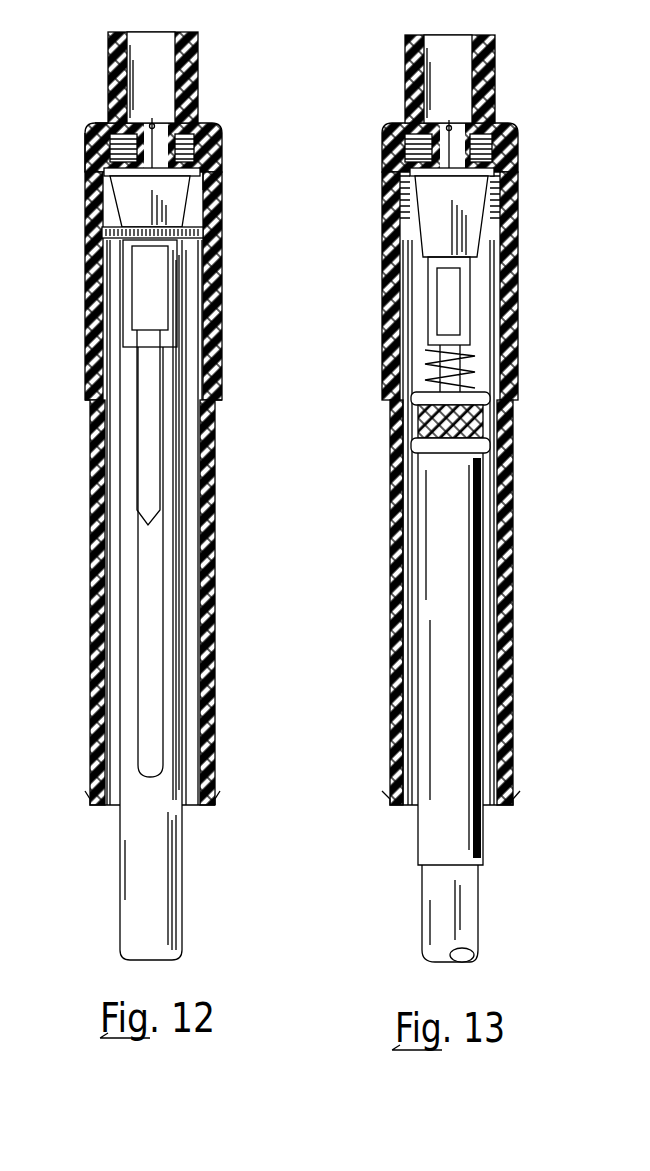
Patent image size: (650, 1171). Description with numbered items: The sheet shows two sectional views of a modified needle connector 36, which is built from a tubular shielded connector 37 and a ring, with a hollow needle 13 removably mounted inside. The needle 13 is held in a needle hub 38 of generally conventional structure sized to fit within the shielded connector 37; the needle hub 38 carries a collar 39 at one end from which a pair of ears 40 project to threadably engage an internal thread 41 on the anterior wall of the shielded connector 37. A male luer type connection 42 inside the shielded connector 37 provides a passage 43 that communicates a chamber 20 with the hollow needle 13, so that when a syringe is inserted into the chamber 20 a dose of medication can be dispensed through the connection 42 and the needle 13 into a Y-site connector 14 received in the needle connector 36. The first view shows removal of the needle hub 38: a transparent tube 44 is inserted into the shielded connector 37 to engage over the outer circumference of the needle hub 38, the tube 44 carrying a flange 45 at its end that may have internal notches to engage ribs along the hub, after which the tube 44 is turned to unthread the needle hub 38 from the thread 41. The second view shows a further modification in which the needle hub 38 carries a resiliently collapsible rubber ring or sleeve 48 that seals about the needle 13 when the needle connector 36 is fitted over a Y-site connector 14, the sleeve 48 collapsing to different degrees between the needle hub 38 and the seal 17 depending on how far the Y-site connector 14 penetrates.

In FIG. 13, the needle 13 is at (470, 378).
In FIG. 13, the Y-site connector 14 is at (412, 525).
In FIG. 13, the seal 17 is at (425, 426).
In FIG. 12, the chamber 20 is at (166, 36).
In FIG. 13, the chamber 20 is at (466, 36).
In FIG. 12, the needle connector 36 is at (280, 309).
In FIG. 12, the shielded connector 37 is at (215, 433).
In FIG. 12, the needle hub 38 is at (178, 197).
In FIG. 13, the needle hub 38 is at (472, 231).
In FIG. 13, the collar 39 is at (400, 177).
In FIG. 13, the ears 40 is at (406, 191).
In FIG. 12, the internal thread 41 is at (208, 150).
In FIG. 12, the male luer type connection 42 is at (118, 125).
In FIG. 13, the male luer type connection 42 is at (418, 122).
In FIG. 12, the passage 43 is at (156, 124).
In FIG. 13, the passage 43 is at (452, 128).
In FIG. 12, the transparent tube 44 is at (183, 893).
In FIG. 12, the flange 45 is at (205, 230).
In FIG. 13, the resiliently collapsible sleeve 48 is at (430, 360).